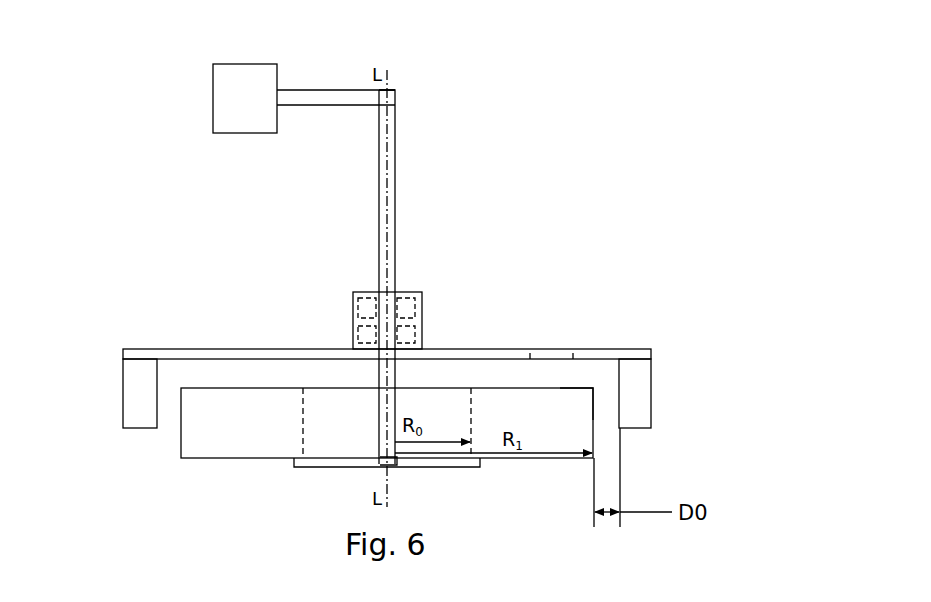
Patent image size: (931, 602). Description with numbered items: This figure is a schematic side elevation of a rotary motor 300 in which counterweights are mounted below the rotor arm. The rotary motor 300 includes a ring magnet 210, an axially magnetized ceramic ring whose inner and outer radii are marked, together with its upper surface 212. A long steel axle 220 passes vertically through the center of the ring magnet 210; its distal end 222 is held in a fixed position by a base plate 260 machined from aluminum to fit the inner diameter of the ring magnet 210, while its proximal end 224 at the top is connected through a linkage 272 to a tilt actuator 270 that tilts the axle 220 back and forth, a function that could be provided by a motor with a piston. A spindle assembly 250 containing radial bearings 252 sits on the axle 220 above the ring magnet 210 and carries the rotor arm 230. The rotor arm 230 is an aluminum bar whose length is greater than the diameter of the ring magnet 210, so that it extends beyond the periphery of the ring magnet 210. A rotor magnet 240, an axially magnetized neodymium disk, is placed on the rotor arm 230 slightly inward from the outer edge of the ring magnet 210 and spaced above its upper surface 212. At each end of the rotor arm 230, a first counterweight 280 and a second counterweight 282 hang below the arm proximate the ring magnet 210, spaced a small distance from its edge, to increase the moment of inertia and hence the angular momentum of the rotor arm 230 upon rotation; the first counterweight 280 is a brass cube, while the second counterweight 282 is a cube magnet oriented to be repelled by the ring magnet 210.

The ring magnet 210 is at (593, 440).
The upper surface of the ring magnet 212 is at (588, 387).
The axle 220 is at (396, 193).
The distal end of the axle 222 is at (399, 466).
The proximal end of the axle 224 is at (393, 90).
The rotor arm 230 is at (587, 349).
The rotor magnet 240 is at (562, 349).
The spindle assembly 250 is at (423, 300).
The radial bearings 252 is at (358, 308).
The base plate 260 is at (482, 466).
The tilt actuator 270 is at (245, 98).
The linkage 272 is at (323, 90).
The first counterweight 280 is at (651, 388).
The second counterweight 282 is at (123, 383).
The rotary motor 300 is at (502, 133).